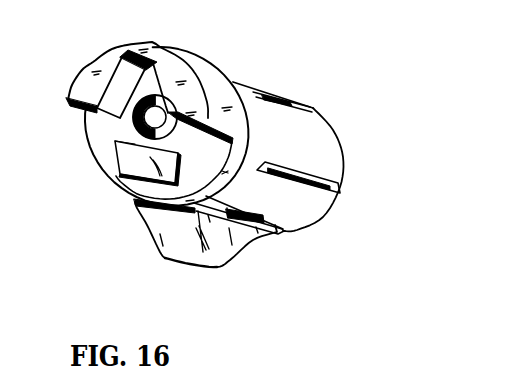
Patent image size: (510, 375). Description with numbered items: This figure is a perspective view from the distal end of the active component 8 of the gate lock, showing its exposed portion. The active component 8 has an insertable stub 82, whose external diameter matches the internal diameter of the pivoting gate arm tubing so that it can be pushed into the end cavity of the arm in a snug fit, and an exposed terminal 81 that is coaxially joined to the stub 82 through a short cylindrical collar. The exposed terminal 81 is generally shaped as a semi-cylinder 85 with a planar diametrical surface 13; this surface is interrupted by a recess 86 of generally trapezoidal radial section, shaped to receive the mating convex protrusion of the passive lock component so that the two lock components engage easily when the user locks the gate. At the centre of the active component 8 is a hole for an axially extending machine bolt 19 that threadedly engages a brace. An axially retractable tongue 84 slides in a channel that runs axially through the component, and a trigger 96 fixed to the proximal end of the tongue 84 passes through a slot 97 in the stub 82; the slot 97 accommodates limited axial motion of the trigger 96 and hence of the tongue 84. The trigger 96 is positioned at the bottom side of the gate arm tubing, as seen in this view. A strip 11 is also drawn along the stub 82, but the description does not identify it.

The active component 8 is at (248, 77).
The mounting strip 11 is at (313, 175).
The planar diametrical surface 13 is at (80, 112).
The machine bolt 19 is at (135, 122).
The exposed terminal 81 is at (143, 44).
The insertable stub portion 82 is at (300, 215).
The axially retractable tongue 84 is at (132, 163).
The semicylindrical portion 85 is at (170, 66).
The recess 86 is at (122, 88).
The trigger 96 is at (177, 242).
The slot 97 is at (257, 219).